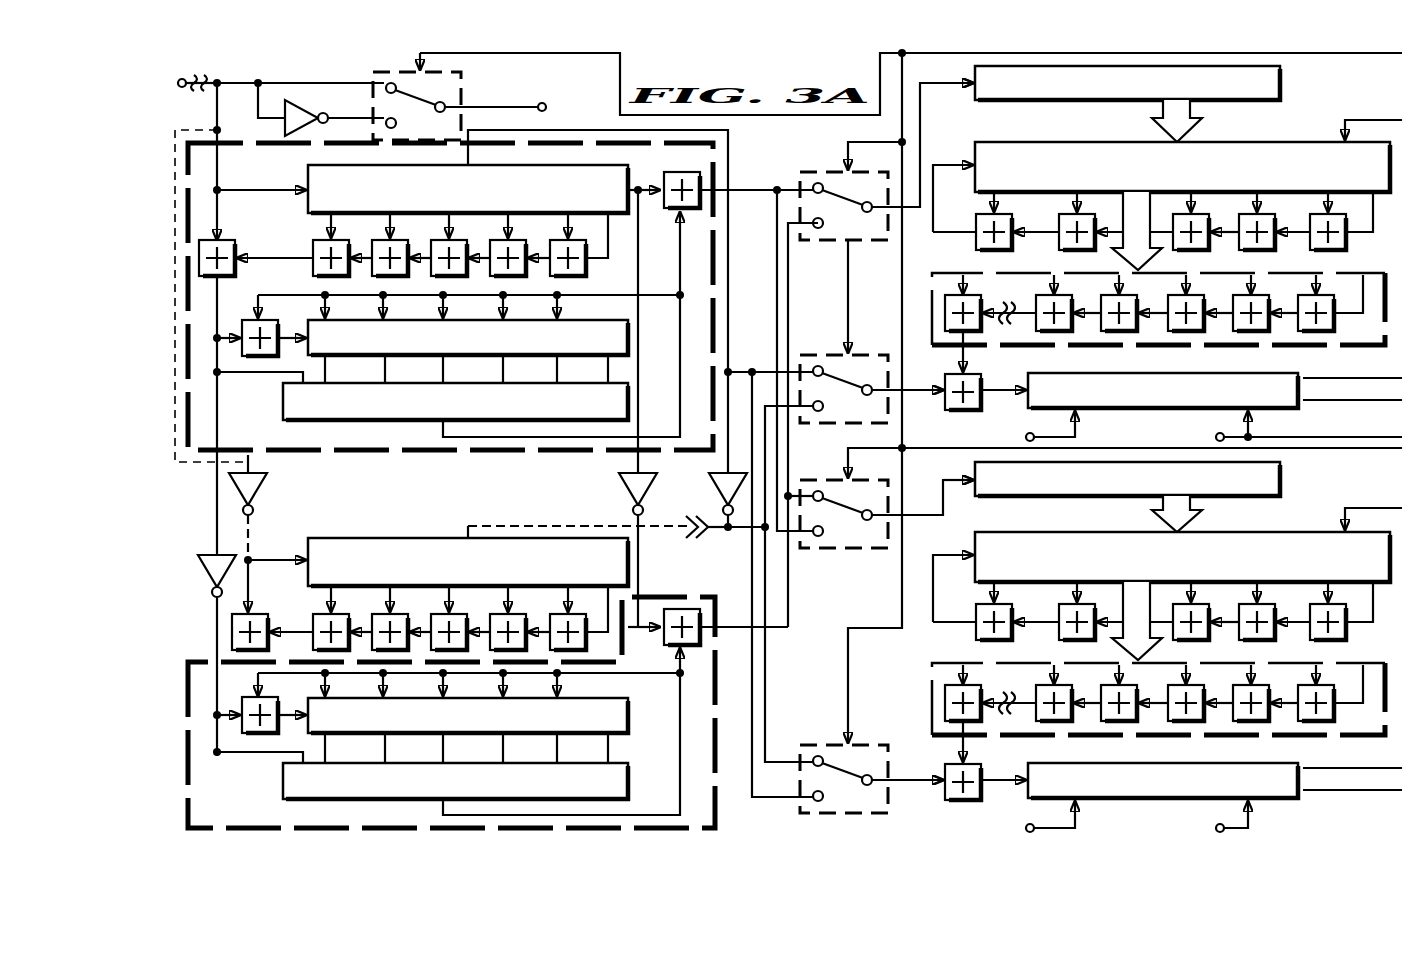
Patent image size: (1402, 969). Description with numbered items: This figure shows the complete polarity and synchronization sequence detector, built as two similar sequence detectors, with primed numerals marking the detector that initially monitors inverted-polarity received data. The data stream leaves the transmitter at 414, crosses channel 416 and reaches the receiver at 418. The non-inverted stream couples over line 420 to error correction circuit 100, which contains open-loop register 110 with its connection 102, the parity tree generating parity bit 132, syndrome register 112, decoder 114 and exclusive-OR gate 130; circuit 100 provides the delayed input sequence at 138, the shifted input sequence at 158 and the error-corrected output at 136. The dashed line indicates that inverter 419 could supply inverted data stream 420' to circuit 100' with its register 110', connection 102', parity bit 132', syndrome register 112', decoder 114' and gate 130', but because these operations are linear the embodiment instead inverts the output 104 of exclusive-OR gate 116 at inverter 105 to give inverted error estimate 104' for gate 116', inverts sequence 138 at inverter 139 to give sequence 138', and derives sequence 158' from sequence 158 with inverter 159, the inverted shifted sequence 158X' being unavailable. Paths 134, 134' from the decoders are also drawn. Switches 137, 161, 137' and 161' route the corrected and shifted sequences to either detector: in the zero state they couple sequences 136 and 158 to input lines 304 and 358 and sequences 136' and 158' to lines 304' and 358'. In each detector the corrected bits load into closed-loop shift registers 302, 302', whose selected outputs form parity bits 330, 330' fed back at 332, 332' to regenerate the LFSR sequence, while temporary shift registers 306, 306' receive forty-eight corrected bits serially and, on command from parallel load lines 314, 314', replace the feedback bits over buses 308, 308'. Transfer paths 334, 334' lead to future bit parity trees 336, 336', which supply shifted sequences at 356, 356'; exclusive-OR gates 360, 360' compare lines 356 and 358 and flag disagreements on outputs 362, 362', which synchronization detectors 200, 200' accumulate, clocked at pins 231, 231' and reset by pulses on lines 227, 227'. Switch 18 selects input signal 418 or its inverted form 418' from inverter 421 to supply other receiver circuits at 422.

The switch 18 is at (463, 85).
The error correction circuit 100 is at (450, 320).
The error-correction circuit 100' is at (445, 712).
The input line 102 is at (259, 177).
The input line 102' is at (277, 544).
The output of exclusive-OR gate 116 104 is at (244, 415).
The inverted error estimate 104' is at (218, 772).
The inverter 105 is at (200, 573).
The open-loop register 110 is at (468, 176).
The open-loop register 110' is at (468, 542).
The syndrome register 112 is at (450, 337).
The syndrome register 112' is at (450, 717).
The decoder 114 is at (422, 408).
The decoder 114' is at (422, 787).
The exclusive-OR gate 116 is at (256, 235).
The exclusive-OR gate 116' is at (272, 605).
The exclusive-OR gate 130 is at (682, 173).
The exclusive-OR gate 130' is at (681, 610).
The parity bit 132 is at (444, 244).
The parity bit 132' is at (442, 618).
The correction line 134 is at (561, 324).
The correction line 134' is at (561, 731).
The error-corrected output 136 is at (756, 340).
The inverted error-corrected sequence 136' is at (776, 604).
The switch 137 is at (878, 355).
The switch 137' is at (884, 493).
The delayed input sequence 138 is at (642, 308).
The inverted delayed input sequence 138' is at (642, 648).
The inverter 139 is at (620, 482).
The shifted input sequence 158 is at (640, 301).
The inverted shifted sequence 158' is at (777, 582).
The inverted shifted input sequence 158X' is at (585, 512).
The inverter 159 is at (708, 482).
The switch 161 is at (854, 539).
The switch 161' is at (868, 759).
The synchronization detector 200 is at (1215, 376).
The synchronization detector 200' is at (1215, 766).
The reset line 227 is at (1060, 431).
The reset line 227' is at (1062, 821).
The clock pin 231 is at (1278, 430).
The clock pin 231' is at (1237, 820).
The shift register 302 is at (1182, 152).
The shift register 302' is at (1182, 542).
The sequence detection input line 304 is at (943, 70).
The detector input line 304' is at (940, 467).
The temporary shift register 306 is at (1157, 80).
The temporary shift register 306' is at (1160, 473).
The bus 308 is at (1153, 121).
The bus 308' is at (1153, 514).
The parallel load line 314 is at (1345, 126).
The parallel load line 314' is at (1345, 516).
The parity bit 330 is at (1153, 221).
The parity bit 330' is at (1153, 611).
The feedback 332 is at (953, 180).
The feedback 332' is at (952, 575).
The transfer path 334 is at (1092, 231).
The transfer path 334' is at (1091, 621).
The future bit parity tree 336 is at (1155, 295).
The future bit parity tree 336' is at (1149, 685).
The shifted sequence line 356 is at (990, 351).
The shifted sequence line 356' is at (994, 741).
The shifted input sequence line 358 is at (940, 383).
The detector input line 358' is at (939, 774).
The exclusive-OR gate 360 is at (907, 408).
The exclusive-OR gate 360' is at (907, 802).
The output 362 is at (1004, 409).
The output 362' is at (1006, 799).
The transmitter data stream 414 is at (200, 78).
The channel 416 is at (202, 96).
The receiver input data stream 418 is at (298, 70).
The inverted input signal 418' is at (354, 101).
The inverter 419 is at (267, 476).
The line 420 is at (242, 161).
The inverted polarity received data stream 420' is at (281, 532).
The inverter 421 is at (327, 123).
The output line 422 is at (547, 105).